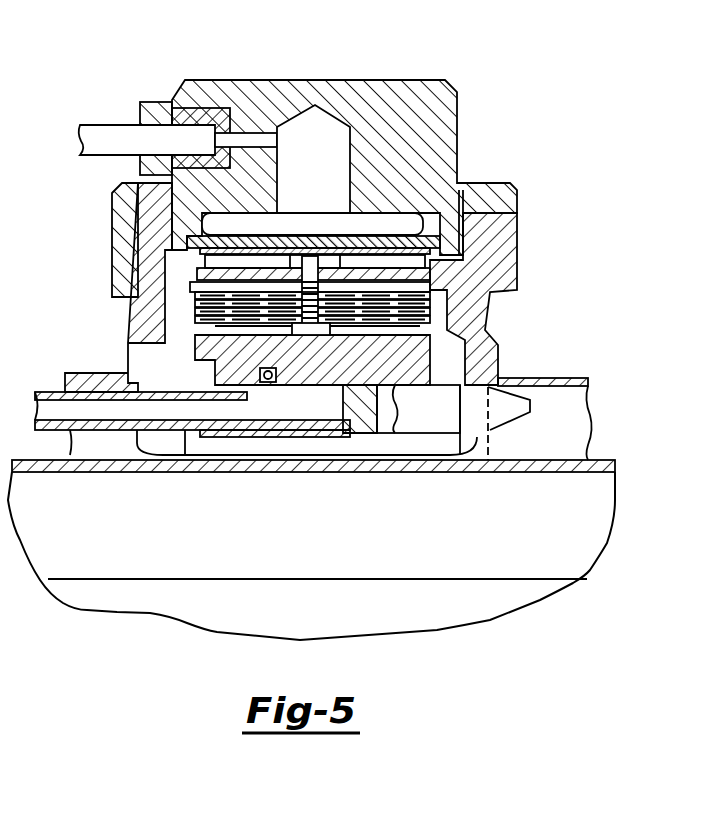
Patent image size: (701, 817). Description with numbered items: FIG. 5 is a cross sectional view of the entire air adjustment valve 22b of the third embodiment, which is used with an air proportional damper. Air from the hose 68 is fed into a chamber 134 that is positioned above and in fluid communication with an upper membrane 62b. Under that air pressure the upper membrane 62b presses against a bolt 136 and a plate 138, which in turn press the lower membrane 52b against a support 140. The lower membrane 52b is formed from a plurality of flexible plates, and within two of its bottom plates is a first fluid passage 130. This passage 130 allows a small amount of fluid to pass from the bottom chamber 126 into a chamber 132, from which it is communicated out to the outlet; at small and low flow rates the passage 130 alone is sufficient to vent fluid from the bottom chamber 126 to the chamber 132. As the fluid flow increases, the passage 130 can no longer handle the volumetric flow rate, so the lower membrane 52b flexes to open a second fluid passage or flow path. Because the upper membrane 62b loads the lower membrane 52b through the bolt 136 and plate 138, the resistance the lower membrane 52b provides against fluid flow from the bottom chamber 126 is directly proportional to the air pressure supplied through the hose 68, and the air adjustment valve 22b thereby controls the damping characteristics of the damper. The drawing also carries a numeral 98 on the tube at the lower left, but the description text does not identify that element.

The air adjustment valve 22b is at (505, 88).
The lower membrane 52b is at (178, 308).
The upper membrane 62b is at (320, 236).
The hose 68 is at (96, 126).
The fluid conduit 98 is at (97, 430).
The bottom chamber 126 is at (305, 430).
The first fluid passage 130 is at (215, 316).
The chamber 132 is at (437, 318).
The chamber 134 is at (330, 120).
The bolt 136 is at (403, 260).
The plate 138 is at (205, 278).
The support 140 is at (417, 348).